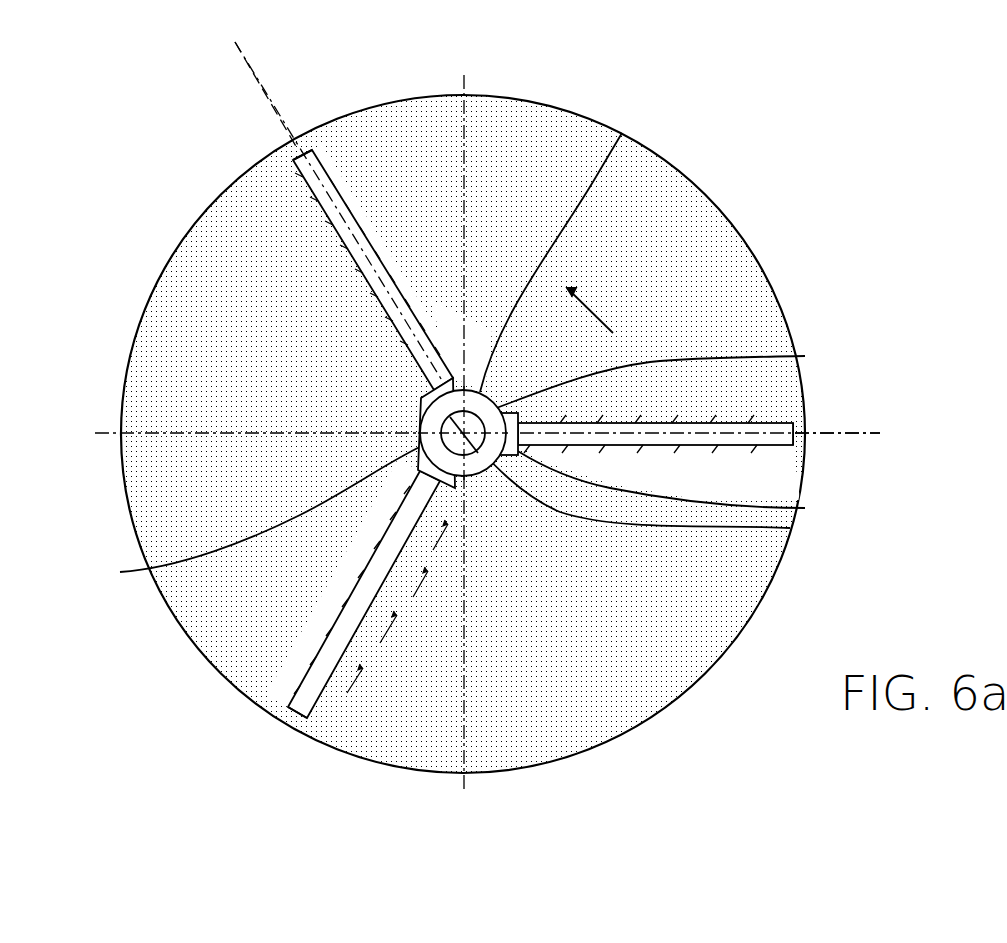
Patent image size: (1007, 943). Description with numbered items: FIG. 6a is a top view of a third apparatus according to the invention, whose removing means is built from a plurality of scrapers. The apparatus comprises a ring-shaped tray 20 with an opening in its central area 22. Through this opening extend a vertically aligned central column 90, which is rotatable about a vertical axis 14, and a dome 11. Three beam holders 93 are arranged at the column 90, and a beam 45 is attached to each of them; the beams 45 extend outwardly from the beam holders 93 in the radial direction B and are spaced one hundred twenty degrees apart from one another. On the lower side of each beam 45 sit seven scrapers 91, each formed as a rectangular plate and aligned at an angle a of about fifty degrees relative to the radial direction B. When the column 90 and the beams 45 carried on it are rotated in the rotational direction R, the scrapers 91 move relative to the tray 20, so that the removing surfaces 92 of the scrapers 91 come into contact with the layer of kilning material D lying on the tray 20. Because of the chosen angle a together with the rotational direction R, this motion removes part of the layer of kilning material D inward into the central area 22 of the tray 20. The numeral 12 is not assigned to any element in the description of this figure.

The grinding disc / rotor body 12 is at (536, 103).
The dome 11 is at (622, 133).
The ring-shaped tray 20 is at (330, 140).
The central area 22 is at (120, 572).
The beam 45 is at (779, 444).
The central column 90 is at (805, 356).
The scraper 91 is at (367, 247).
The removing surface 92 is at (318, 716).
The beam holder 93 is at (805, 508).
The vertical axis 14 is at (790, 528).
The angle α a is at (333, 223).
The radial direction B is at (266, 76).
The layer of kilning material D is at (630, 178).
The rotational direction R is at (593, 302).